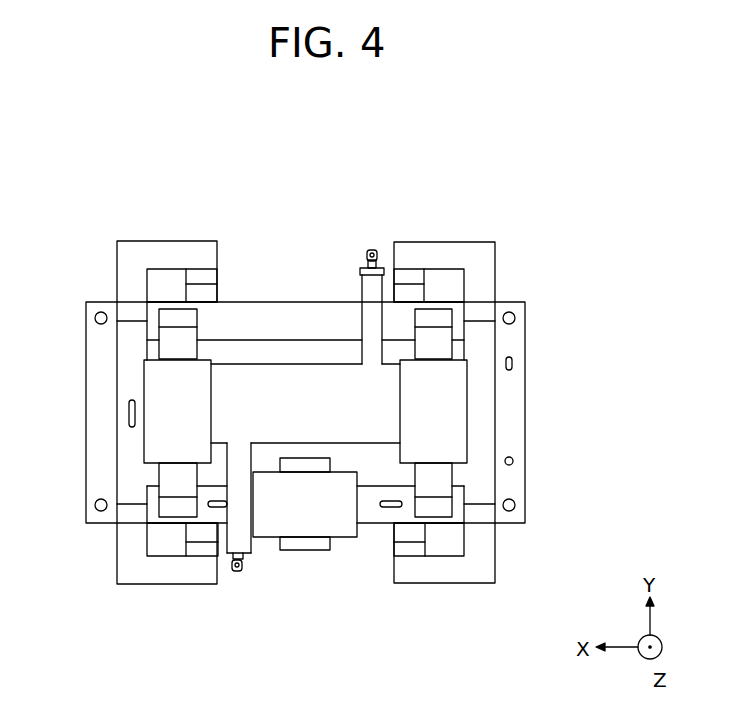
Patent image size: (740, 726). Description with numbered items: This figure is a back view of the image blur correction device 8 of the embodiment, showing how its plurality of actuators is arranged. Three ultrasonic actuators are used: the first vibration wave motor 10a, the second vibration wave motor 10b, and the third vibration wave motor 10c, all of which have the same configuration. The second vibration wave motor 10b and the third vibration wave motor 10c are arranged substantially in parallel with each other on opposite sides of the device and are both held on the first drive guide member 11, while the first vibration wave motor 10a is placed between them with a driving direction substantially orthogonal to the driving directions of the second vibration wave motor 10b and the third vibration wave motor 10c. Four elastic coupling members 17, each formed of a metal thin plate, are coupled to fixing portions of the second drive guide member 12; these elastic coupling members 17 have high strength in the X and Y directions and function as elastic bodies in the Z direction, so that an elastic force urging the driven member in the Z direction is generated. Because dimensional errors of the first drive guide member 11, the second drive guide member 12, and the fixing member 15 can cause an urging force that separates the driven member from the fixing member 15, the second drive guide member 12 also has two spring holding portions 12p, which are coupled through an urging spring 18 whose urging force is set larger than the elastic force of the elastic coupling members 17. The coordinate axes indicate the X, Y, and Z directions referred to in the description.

The image blur correction device 8 is at (607, 194).
The first vibration wave motor 10a is at (333, 518).
The second vibration wave motor 10b is at (155, 428).
The third vibration wave motor 10c is at (456, 412).
The first drive guide member 11 is at (253, 302).
The second drive guide member 12 is at (480, 388).
The spring holding portion 12p is at (377, 256).
The fixing member 15 is at (100, 388).
The elastic coupling member 17 is at (132, 262).
The urging spring 18 is at (367, 256).